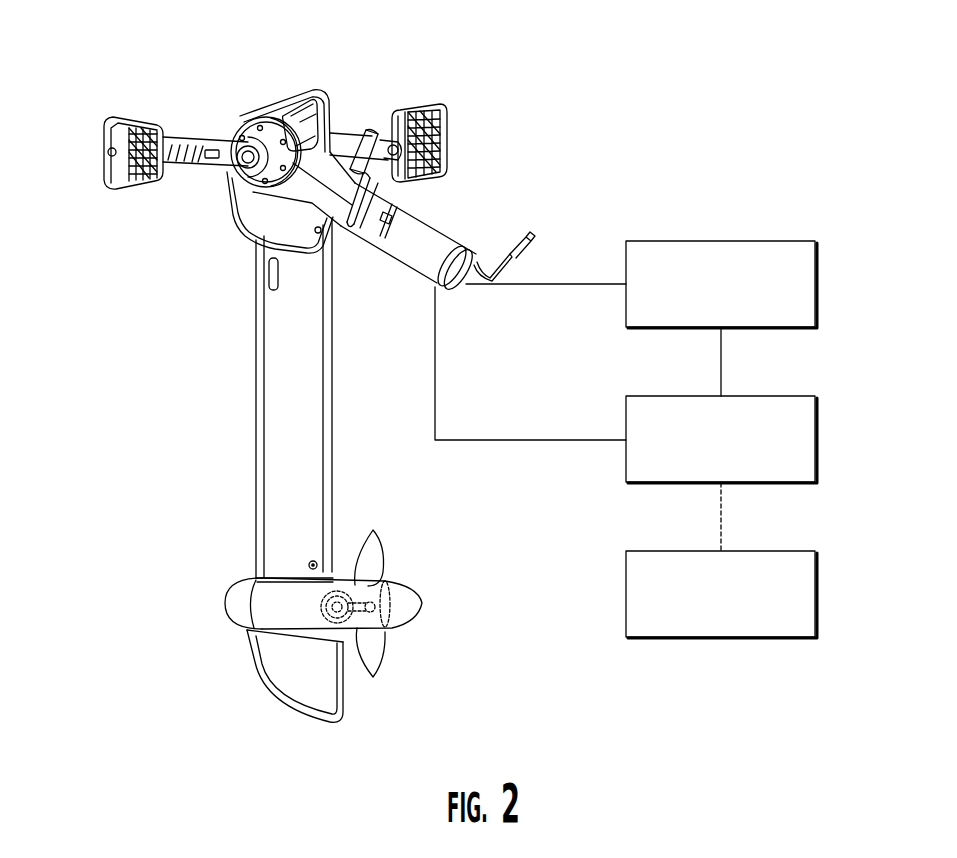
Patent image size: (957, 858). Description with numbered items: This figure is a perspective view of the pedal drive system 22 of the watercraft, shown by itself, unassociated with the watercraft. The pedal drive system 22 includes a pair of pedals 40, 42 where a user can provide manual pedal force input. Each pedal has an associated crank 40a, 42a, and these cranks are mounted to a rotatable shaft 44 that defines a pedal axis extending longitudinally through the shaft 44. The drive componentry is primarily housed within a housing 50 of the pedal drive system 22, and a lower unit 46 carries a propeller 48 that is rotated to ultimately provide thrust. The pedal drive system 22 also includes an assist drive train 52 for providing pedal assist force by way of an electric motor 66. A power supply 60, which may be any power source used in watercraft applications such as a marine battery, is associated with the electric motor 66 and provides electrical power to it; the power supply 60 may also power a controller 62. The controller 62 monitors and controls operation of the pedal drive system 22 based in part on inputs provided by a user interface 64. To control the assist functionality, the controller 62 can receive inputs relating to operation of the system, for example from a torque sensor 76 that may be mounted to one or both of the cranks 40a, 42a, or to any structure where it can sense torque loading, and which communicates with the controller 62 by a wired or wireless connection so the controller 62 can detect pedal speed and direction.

The pedal drive system 22 is at (123, 390).
The pedal 40 is at (136, 117).
The crank 40a is at (208, 149).
The pedal 42 is at (432, 107).
The crank 42a is at (350, 138).
The rotatable shaft 44 is at (236, 197).
The lower unit 46 is at (238, 640).
The propeller 48 is at (408, 600).
The housing 50 is at (273, 442).
The assist drive train 52 is at (408, 283).
The power supply 60 is at (817, 275).
The controller 62 is at (817, 431).
The user interface 64 is at (817, 585).
The electric motor 66 is at (430, 240).
The torque sensor 76 is at (246, 145).